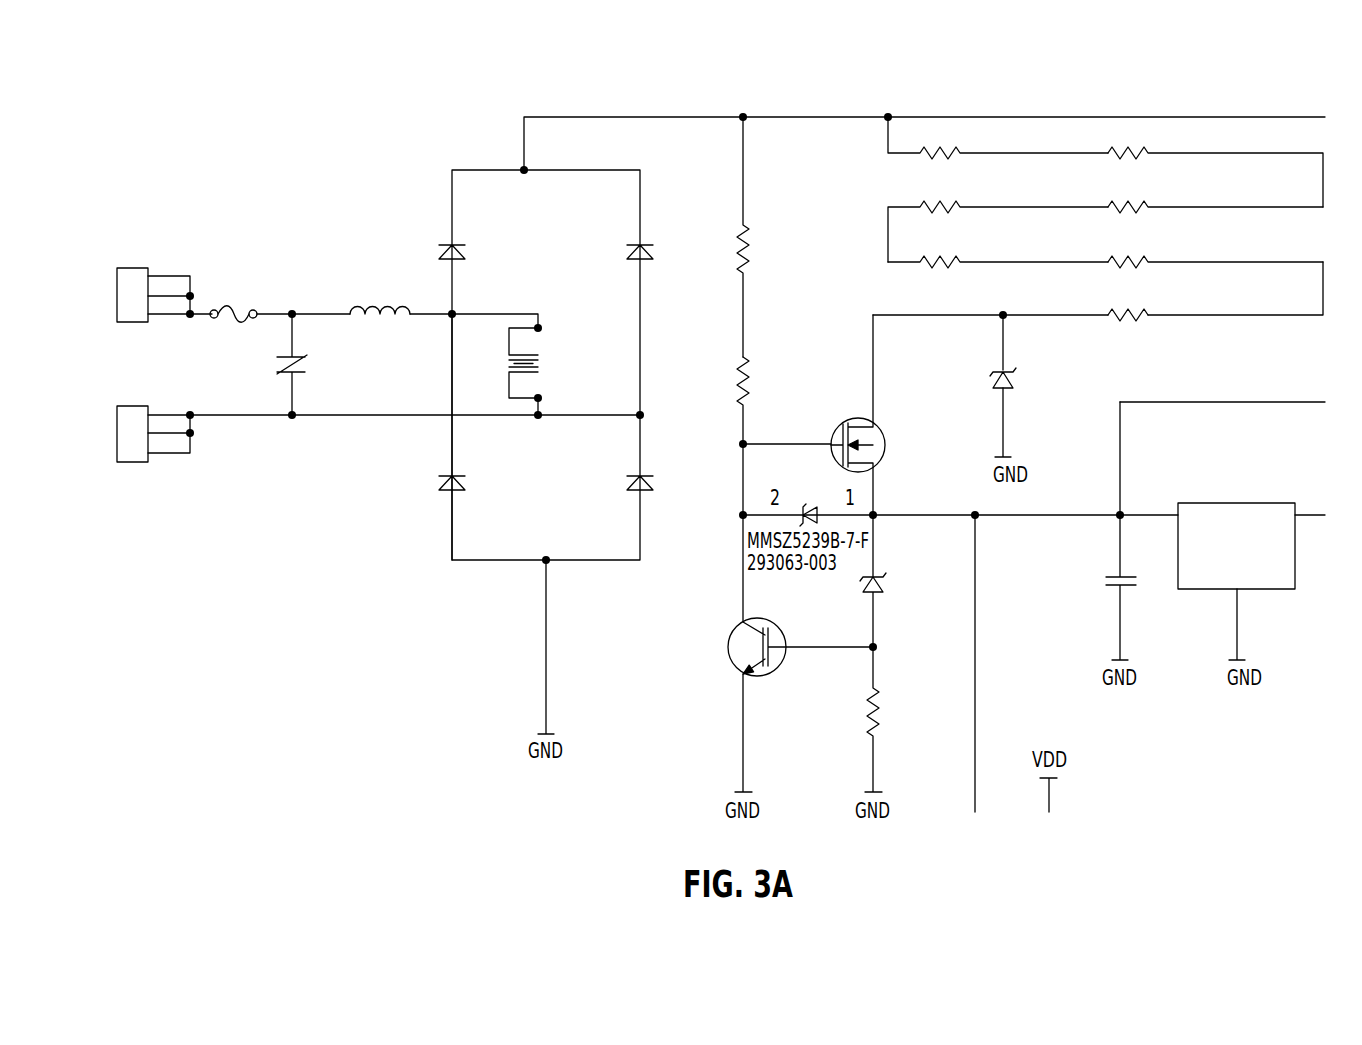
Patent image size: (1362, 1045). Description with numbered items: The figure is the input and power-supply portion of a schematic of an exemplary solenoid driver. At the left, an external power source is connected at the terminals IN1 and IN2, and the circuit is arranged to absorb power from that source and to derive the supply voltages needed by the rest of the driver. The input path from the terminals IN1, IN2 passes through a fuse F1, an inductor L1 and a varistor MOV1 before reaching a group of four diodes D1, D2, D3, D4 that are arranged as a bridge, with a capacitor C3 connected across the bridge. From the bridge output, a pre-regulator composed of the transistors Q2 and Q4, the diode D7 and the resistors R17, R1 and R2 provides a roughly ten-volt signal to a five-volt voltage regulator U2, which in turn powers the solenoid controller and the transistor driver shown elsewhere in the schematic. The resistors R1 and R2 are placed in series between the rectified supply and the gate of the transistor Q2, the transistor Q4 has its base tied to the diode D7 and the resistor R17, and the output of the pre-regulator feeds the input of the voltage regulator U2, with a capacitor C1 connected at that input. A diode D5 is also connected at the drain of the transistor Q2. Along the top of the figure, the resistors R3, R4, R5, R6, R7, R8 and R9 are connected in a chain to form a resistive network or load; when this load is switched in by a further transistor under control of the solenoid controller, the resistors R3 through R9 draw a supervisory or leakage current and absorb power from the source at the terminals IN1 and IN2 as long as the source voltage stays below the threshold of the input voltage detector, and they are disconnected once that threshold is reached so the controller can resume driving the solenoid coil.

The terminal IN1 is at (163, 296).
The terminal IN2 is at (163, 434).
The thermal fuse F1 is at (302, 275).
The inductor L1 is at (380, 314).
The metal oxide varistor MOV1 is at (239, 364).
The rectifier diode D1 is at (500, 476).
The rectifier diode D2 is at (588, 498).
The rectifier diode D3 is at (500, 268).
The rectifier diode D4 is at (598, 233).
The capacitor C3 is at (574, 371).
The resistor R1 is at (730, 237).
The resistor R2 is at (730, 463).
The resistor R3 is at (998, 149).
The resistor R4 is at (1213, 166).
The resistor R5 is at (998, 221).
The resistor R6 is at (1213, 209).
The resistor R7 is at (998, 264).
The resistor R8 is at (1213, 264).
The resistor R9 is at (1191, 316).
The transient voltage suppressor diode D5 is at (1052, 374).
The transistor Q2 is at (900, 415).
The diode D7 is at (882, 592).
The resistor R17 is at (885, 751).
The transistor Q4 is at (723, 653).
The capacitor C1 is at (1062, 531).
The voltage regulator U2 is at (1241, 547).